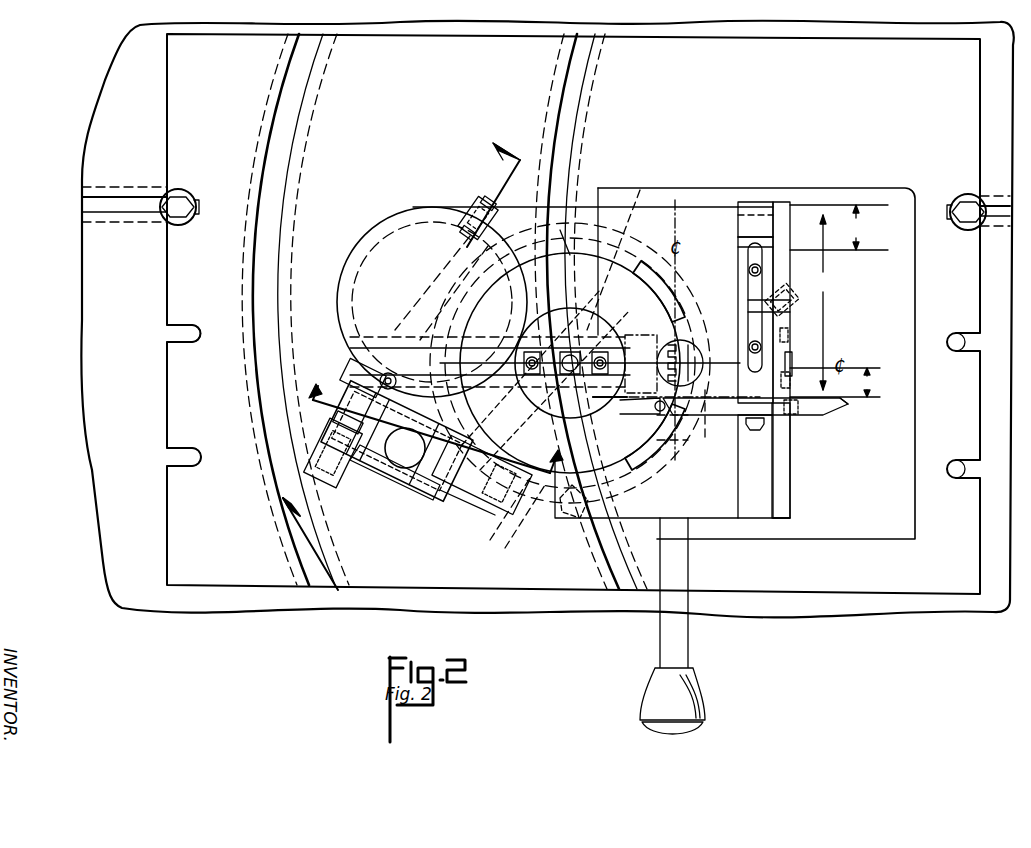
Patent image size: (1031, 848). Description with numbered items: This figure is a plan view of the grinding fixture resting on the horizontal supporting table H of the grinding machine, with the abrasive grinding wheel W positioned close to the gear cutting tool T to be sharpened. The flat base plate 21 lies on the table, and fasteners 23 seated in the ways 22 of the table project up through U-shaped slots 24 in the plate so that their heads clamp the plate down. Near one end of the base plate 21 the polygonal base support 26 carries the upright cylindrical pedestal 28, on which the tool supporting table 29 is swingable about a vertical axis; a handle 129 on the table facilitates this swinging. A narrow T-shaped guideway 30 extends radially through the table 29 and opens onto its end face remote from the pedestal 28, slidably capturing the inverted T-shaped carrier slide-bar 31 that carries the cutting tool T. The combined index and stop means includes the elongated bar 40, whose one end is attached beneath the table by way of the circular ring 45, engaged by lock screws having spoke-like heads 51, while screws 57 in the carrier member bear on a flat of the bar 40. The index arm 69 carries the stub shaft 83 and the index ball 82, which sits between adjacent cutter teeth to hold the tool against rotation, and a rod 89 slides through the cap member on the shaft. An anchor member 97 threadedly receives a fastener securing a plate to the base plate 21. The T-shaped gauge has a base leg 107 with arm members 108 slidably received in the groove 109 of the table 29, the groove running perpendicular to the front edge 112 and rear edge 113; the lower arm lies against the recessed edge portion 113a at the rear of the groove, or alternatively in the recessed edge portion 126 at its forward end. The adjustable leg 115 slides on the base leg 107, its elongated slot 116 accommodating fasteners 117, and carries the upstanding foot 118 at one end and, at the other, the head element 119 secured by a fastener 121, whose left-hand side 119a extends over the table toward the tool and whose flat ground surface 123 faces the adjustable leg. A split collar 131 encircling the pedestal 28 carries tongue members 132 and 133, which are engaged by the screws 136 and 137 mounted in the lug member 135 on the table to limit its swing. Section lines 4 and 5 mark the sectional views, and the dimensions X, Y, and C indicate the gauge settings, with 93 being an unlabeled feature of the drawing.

The base plate 21 is at (922, 583).
The ways 22 is at (108, 210).
The fastener 23 is at (180, 200).
The U-shaped slot 24 is at (168, 457).
The base support 26 is at (876, 535).
The upright cylindrical pedestal 28 is at (697, 303).
The tool supporting table 29 is at (565, 207).
The T-shaped guideway 30 is at (362, 360).
The carrier slide-bar 31 is at (580, 340).
The elongated bar 40 is at (343, 490).
The circular ring 45 is at (372, 240).
The spoke-like head 51 is at (472, 204).
The screws 57 is at (364, 380).
The index arm 69 is at (473, 478).
The index ball 82 is at (517, 500).
The stub shaft 83 is at (482, 516).
The rod 89 is at (360, 470).
The curved guide rails 93 is at (278, 172).
The anchor member 97 is at (560, 520).
The base leg 107 is at (745, 228).
The arm members 108 is at (780, 190).
The groove 109 is at (788, 490).
The front edge 112 is at (704, 520).
The rear edge 113 is at (612, 196).
The recessed edge portion 113a is at (748, 205).
The adjustable leg 115 is at (768, 272).
The elongated slot 116 is at (752, 290).
The fasteners 117 is at (747, 347).
The upstanding foot 118 is at (772, 246).
The head element 119 is at (840, 416).
The left-hand side 119a is at (663, 412).
The fastener 121 is at (754, 432).
The flat ground surface 123 is at (845, 398).
The recessed edge portion 126 is at (740, 518).
The handle 129 is at (688, 640).
The split collar 131 is at (710, 450).
The tongue members 132 is at (796, 420).
The tongue members 133 is at (790, 304).
The lug member 135 is at (808, 355).
The screw 136 is at (790, 380).
The screw 137 is at (795, 338).
The section line 4- 4 is at (432, 421).
The section line 5- 5 is at (389, 357).
The gear cutting tool T is at (588, 258).
The abrasive grinding wheel W is at (674, 330).
The dimension X is at (839, 227).
The dimension Y is at (822, 302).
The dimension C is at (835, 382).
The horizontal supporting table H is at (915, 610).